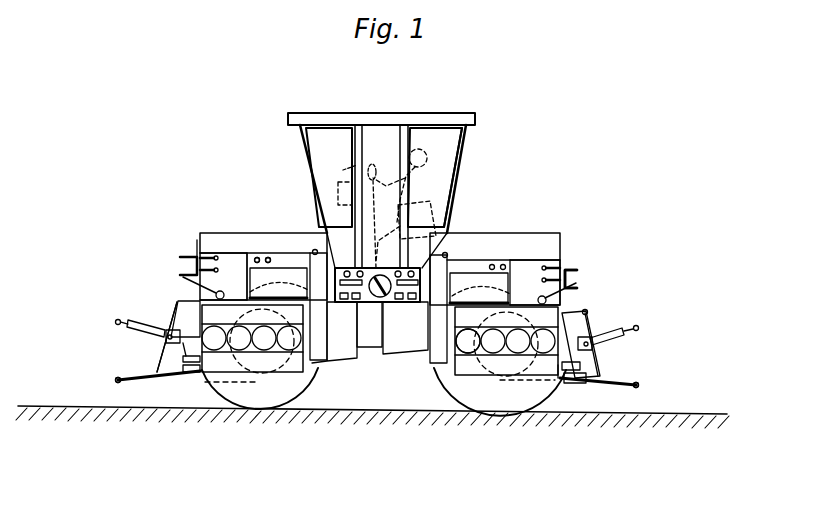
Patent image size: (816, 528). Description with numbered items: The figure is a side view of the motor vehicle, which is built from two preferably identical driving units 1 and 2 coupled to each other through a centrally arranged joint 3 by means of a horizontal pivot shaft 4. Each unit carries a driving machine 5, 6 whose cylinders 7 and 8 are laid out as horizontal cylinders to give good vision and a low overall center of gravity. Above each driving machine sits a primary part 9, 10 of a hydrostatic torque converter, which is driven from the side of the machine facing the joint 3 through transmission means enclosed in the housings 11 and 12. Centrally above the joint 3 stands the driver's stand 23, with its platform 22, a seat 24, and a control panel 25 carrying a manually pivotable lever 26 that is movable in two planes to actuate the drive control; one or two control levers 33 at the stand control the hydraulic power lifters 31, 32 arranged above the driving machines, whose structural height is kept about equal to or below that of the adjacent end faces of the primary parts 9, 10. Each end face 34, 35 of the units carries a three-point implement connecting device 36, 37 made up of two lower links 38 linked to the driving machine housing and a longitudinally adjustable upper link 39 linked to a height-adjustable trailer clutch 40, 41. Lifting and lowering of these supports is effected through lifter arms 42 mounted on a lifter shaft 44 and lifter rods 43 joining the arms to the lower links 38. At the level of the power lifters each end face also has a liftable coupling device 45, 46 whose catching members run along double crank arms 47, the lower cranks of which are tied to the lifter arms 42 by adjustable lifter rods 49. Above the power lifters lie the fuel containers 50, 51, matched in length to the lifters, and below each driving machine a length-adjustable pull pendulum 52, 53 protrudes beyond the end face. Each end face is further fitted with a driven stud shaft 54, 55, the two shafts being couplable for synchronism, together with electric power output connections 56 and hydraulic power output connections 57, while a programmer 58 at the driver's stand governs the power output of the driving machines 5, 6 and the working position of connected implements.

The driving unit 1 is at (297, 260).
The driving unit 2 is at (463, 263).
The joint 3 is at (373, 345).
The horizontal pivot shaft 4 is at (383, 330).
The driving machine 5 is at (262, 340).
The driving machine 6 is at (497, 345).
The cylinders 7 is at (202, 368).
The cylinders 8 is at (469, 345).
The primary part 9 is at (262, 290).
The primary part 10 is at (481, 288).
The housing 11 is at (320, 358).
The housing 12 is at (438, 355).
The platform 22 is at (395, 304).
The driver's stand 23 is at (374, 128).
The seat 24 is at (436, 200).
The control panel 25 is at (338, 190).
The manually pivotable lever 26 is at (370, 182).
The hydraulic power lifter 31 is at (226, 268).
The hydraulic power lifter 32 is at (538, 273).
The control lever 33 is at (351, 170).
The end face 34 is at (200, 290).
The end face 35 is at (560, 306).
The implement connecting device 36 is at (118, 378).
The implement connecting device 37 is at (630, 383).
The lower link 38 is at (134, 381).
The upper link 39 is at (122, 327).
The trailer clutch 40 is at (160, 375).
The trailer clutch 41 is at (582, 383).
The lifter arm 42 is at (178, 303).
The lifter rod 43 is at (161, 361).
The lifter shaft 44 is at (182, 272).
The coupling device 45 is at (188, 254).
The coupling device 46 is at (590, 268).
The double crank arm 47 is at (206, 258).
The lifter rod 49 is at (243, 283).
The fuel container 50 is at (276, 243).
The fuel container 51 is at (451, 236).
The pull pendulum 52 is at (223, 377).
The pull pendulum 53 is at (531, 378).
The stud shaft 54 is at (184, 345).
The stud shaft 55 is at (562, 380).
The electric power output connection 56 is at (257, 257).
The hydraulic power output connection 57 is at (268, 257).
The programmer 58 is at (354, 294).